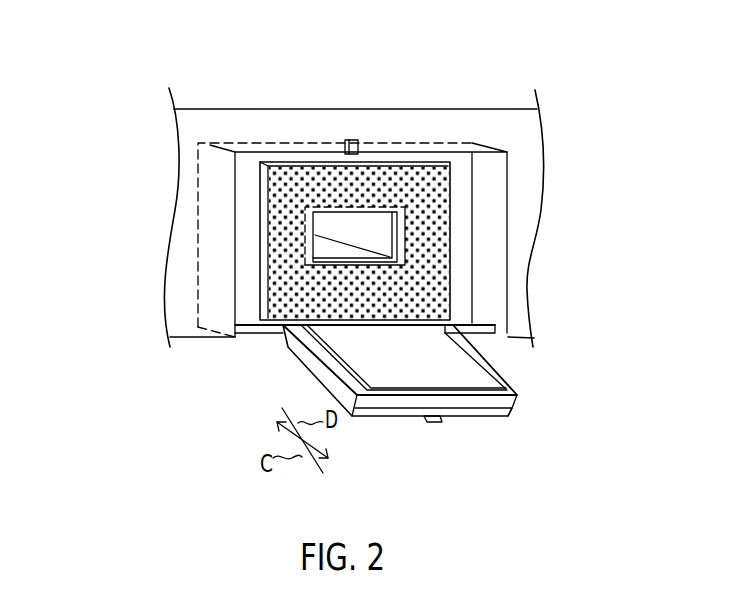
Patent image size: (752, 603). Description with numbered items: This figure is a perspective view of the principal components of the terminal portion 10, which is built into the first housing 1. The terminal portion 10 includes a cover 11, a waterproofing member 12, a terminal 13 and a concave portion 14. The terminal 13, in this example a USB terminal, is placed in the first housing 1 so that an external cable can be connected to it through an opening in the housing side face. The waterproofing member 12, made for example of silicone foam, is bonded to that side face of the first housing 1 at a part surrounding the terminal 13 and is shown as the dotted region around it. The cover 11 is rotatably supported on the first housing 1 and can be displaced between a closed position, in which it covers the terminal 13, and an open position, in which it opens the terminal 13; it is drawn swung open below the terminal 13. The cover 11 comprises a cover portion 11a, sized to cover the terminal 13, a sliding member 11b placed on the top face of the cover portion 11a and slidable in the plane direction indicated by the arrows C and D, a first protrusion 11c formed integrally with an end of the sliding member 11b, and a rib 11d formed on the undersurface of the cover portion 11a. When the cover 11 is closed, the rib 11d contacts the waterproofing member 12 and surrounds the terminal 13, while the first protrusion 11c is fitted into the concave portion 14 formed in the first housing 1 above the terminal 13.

The first housing 1 is at (230, 108).
The terminal portion 10 is at (478, 77).
The cover 11 is at (460, 405).
The cover portion 11a is at (507, 407).
The sliding member 11b is at (503, 416).
The first protrusion 11c is at (441, 422).
The rib 11d is at (510, 394).
The waterproofing member 12 is at (428, 287).
The terminal 13 is at (378, 235).
The concave portion 14 is at (353, 140).